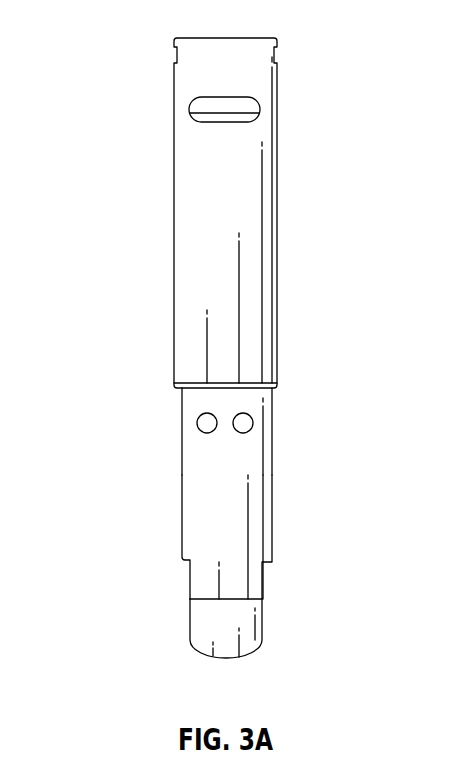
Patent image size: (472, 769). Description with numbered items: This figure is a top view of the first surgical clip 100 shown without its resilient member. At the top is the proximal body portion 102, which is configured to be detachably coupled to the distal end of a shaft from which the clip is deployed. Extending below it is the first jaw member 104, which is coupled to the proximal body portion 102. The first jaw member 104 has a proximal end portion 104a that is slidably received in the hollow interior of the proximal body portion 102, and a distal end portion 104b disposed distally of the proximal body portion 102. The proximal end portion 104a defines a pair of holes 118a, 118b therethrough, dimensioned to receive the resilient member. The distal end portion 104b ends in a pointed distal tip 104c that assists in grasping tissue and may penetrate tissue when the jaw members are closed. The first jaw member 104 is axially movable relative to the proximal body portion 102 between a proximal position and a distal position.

The first surgical clip 100 is at (148, 33).
The proximal body portion 102 is at (277, 195).
The first jaw member 104 is at (185, 561).
The proximal end portion 104a is at (182, 402).
The distal end portion 104b is at (252, 538).
The pointed distal tip 104c is at (224, 645).
The hole 118a is at (200, 423).
The hole 118b is at (243, 423).